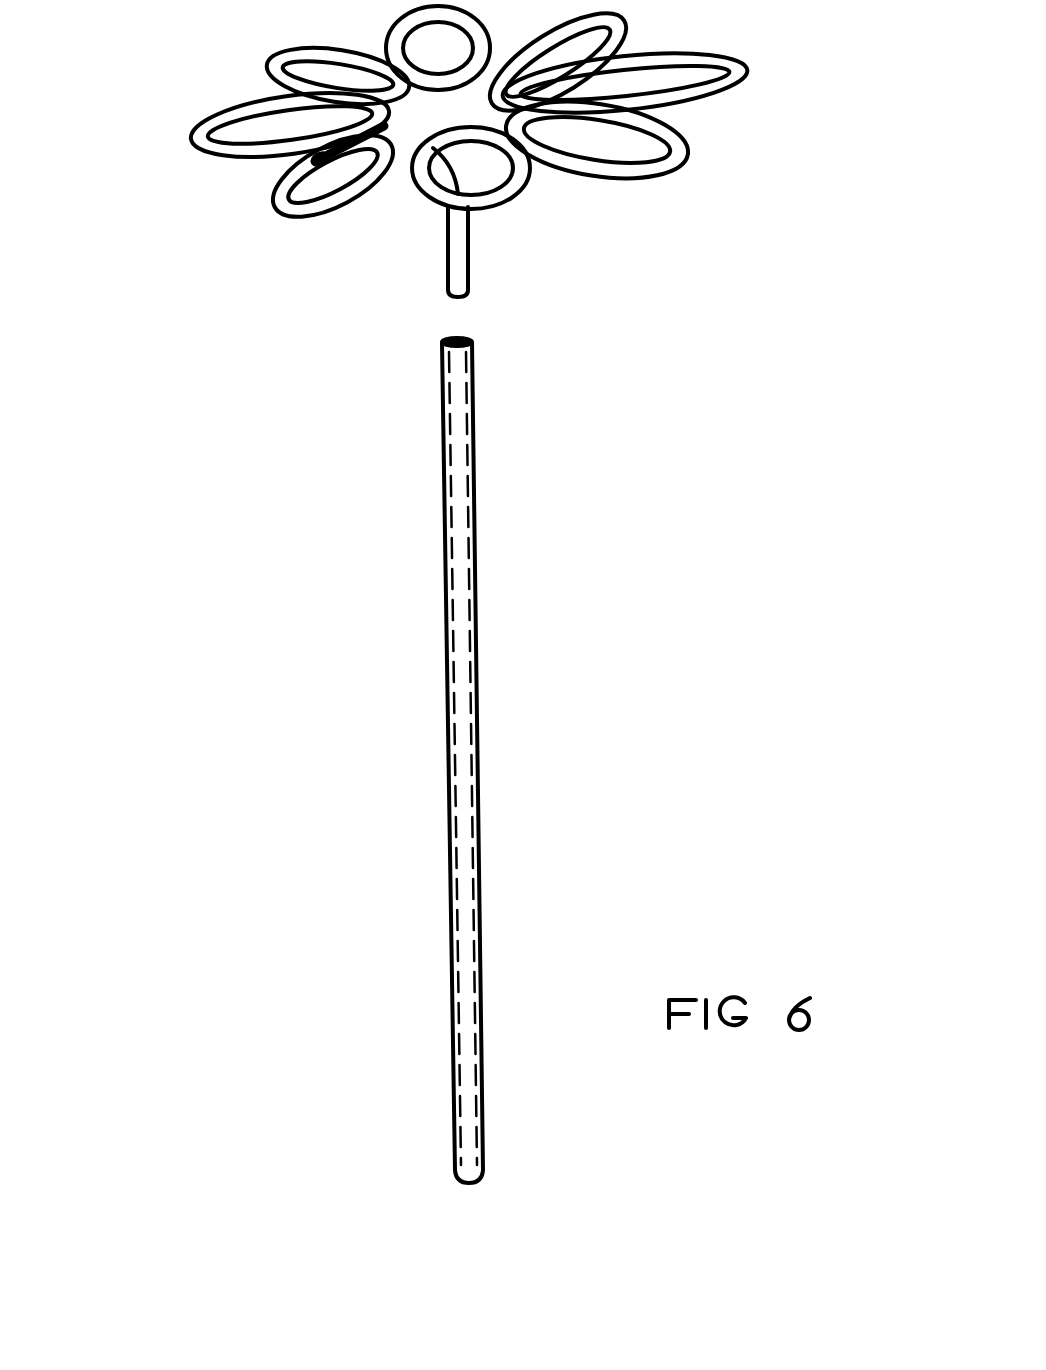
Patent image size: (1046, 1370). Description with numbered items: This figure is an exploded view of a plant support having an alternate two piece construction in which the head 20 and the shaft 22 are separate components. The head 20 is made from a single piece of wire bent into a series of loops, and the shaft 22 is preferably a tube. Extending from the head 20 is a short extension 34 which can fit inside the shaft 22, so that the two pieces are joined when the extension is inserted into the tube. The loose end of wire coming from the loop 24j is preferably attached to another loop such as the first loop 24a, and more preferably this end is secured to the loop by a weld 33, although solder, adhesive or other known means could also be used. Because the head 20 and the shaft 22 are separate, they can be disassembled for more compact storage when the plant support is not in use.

The head 20 is at (485, 199).
The shaft 22 is at (474, 647).
The first loop 24a is at (278, 216).
The loop 24j is at (433, 204).
The weld 33 is at (305, 164).
The short extension 34 is at (470, 262).